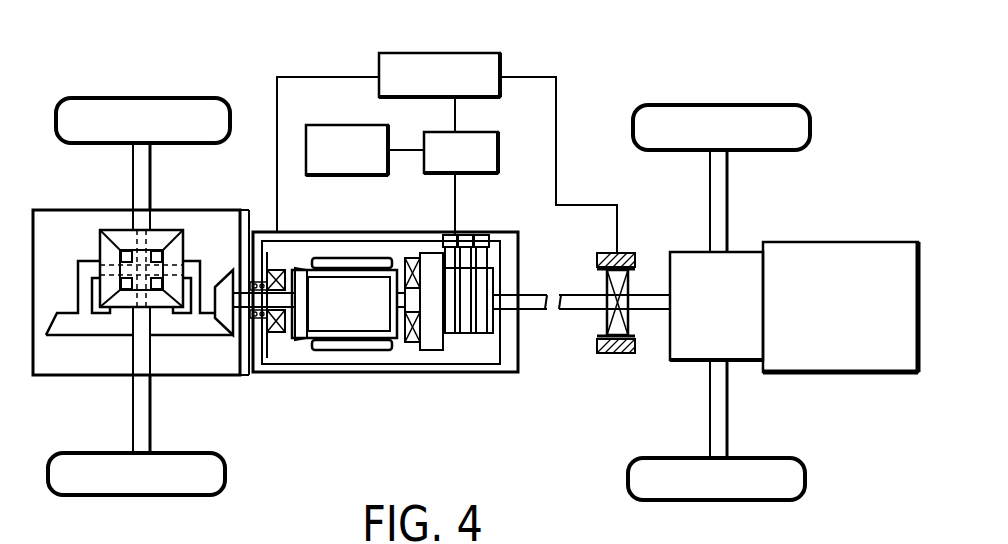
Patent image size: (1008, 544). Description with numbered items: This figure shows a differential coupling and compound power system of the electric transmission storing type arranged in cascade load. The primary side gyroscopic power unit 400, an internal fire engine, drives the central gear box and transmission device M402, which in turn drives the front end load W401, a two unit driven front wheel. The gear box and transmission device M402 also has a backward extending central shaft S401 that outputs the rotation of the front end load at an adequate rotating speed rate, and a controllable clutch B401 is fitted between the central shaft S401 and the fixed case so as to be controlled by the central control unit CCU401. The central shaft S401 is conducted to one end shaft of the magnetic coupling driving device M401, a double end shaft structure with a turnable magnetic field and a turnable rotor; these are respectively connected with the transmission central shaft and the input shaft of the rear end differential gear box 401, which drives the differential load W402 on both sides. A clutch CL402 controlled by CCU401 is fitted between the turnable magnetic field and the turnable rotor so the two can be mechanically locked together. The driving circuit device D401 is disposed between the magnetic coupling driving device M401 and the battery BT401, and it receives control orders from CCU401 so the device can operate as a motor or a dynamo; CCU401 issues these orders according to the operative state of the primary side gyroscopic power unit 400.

The rear end differential gear box 401 is at (95, 377).
The differential load W402 is at (180, 122).
The front end load W401 is at (795, 120).
The magnetic coupling driving device M401 is at (473, 373).
The clutch CL402 is at (273, 337).
The central control unit CCU401 is at (447, 153).
The battery BT401 is at (365, 150).
The driving circuit device D401 is at (461, 183).
The central shaft S401 is at (652, 303).
The controllable clutch B401 is at (612, 285).
The central gear box and transmission device M402 is at (748, 258).
The primary side gyroscopic power unit 400 is at (832, 254).